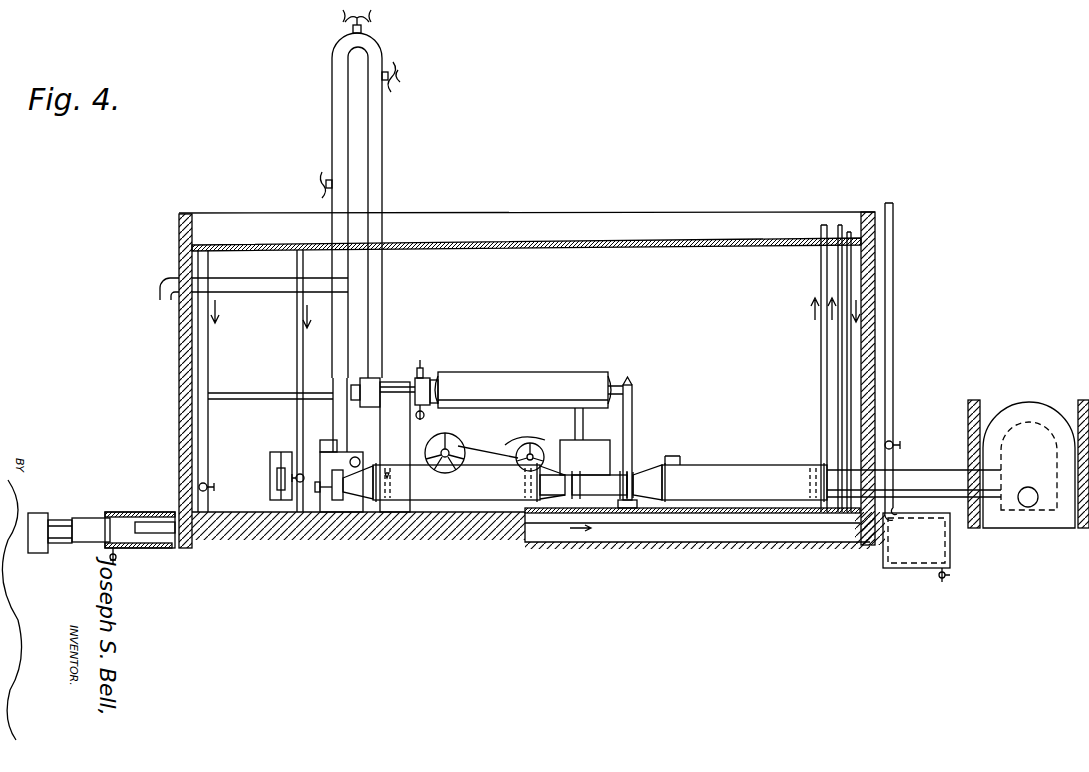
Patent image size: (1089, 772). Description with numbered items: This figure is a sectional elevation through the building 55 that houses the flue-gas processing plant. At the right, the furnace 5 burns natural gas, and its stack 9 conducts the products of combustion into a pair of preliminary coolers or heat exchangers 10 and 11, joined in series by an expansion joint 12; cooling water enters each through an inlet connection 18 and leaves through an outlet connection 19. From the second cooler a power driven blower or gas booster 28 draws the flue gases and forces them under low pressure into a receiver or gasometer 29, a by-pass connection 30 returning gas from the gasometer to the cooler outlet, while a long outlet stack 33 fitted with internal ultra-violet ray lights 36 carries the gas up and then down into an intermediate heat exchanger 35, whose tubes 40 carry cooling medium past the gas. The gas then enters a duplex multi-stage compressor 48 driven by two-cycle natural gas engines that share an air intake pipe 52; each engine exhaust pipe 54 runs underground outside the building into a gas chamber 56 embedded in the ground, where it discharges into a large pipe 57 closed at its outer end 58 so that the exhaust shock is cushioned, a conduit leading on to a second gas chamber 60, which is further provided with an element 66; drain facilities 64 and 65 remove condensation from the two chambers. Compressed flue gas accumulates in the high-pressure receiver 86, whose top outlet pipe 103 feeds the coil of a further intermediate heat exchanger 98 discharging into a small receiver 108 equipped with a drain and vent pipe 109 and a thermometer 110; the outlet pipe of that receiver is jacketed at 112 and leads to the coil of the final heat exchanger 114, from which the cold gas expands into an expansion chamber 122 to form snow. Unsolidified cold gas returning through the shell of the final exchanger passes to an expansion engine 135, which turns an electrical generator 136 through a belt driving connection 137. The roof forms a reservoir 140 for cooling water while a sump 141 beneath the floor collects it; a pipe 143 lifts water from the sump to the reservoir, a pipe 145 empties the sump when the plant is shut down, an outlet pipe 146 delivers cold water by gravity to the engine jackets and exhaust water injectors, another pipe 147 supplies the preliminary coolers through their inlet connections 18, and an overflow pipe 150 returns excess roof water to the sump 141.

The furnace 5 is at (1040, 404).
The stack 9 is at (914, 483).
The preliminary cooler or heat exchanger 10 is at (727, 482).
The preliminary cooler or heat exchanger 11 is at (469, 482).
The expansion joint 12 is at (582, 472).
The inlet connection 18 is at (386, 465).
The outlet connection 19 is at (522, 466).
The power driven blower or gas booster 28 is at (330, 502).
The receiver or gasometer 29 is at (346, 505).
The by-pass connection 30 is at (349, 463).
The outlet stack 33 is at (376, 180).
The intermediate heat exchanger 35 is at (370, 385).
The ultra-violet ray lights 36 is at (384, 31).
The tubes 40 is at (256, 396).
The compressor 48 is at (482, 445).
The air intake pipe 52 is at (252, 292).
The exhaust pipe 54 is at (232, 537).
The building 55 is at (185, 345).
The gas chamber or receiver 56 is at (128, 512).
The pipes 57 is at (84, 517).
The closed outer ends 58 is at (43, 512).
The second gas chamber 60 is at (935, 543).
The drain facilities 64 is at (118, 558).
The drain facilities 65 is at (935, 578).
The down pipe 66 is at (895, 412).
The receiver 86 is at (632, 420).
The intermediate heat exchanger 98 is at (570, 385).
The top outlet pipe 103 is at (628, 380).
The small receiver 108 is at (420, 400).
The drain and vent pipe 109 is at (425, 417).
The thermometer 110 is at (422, 366).
The jacket 112 is at (397, 374).
The final heat exchanger 114 is at (390, 408).
The expansion chamber 122 is at (287, 462).
The expansion engine 135 is at (440, 378).
The electrical generator 136 is at (533, 450).
The belt driving connection 137 is at (512, 440).
The reservoir 140 is at (650, 228).
The collecting reservoir or sump 141 is at (755, 540).
The pipe 143 is at (821, 328).
The pipe 145 is at (838, 370).
The outlet pipe 146 is at (208, 378).
The pipe 147 is at (297, 355).
The overflow pipe 150 is at (851, 360).